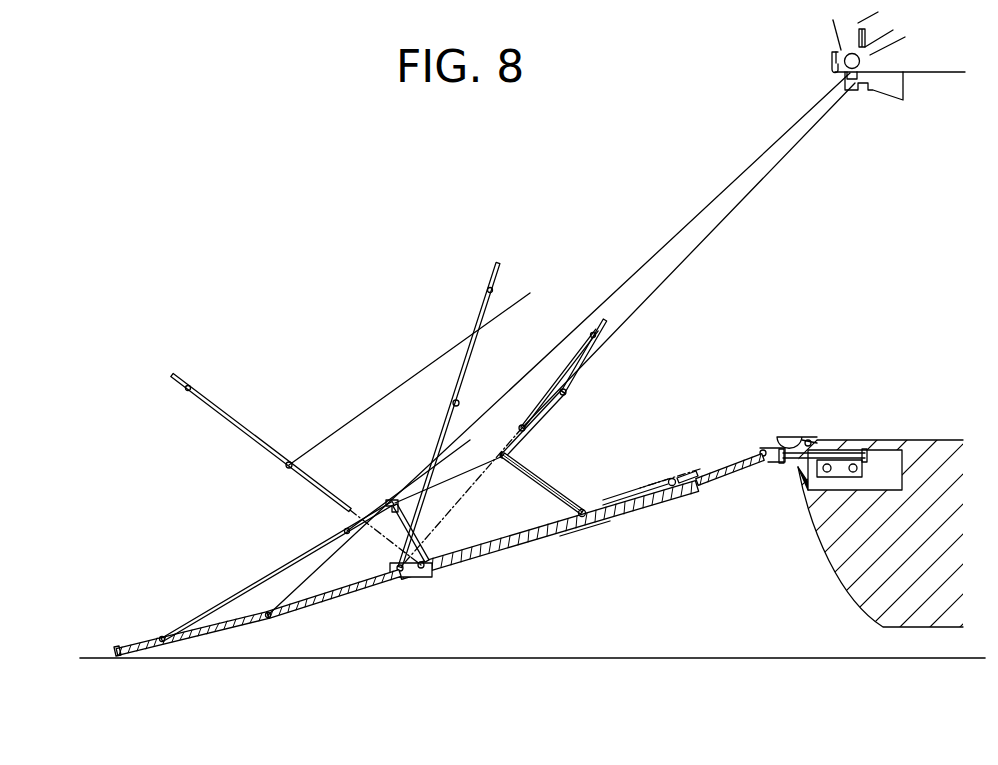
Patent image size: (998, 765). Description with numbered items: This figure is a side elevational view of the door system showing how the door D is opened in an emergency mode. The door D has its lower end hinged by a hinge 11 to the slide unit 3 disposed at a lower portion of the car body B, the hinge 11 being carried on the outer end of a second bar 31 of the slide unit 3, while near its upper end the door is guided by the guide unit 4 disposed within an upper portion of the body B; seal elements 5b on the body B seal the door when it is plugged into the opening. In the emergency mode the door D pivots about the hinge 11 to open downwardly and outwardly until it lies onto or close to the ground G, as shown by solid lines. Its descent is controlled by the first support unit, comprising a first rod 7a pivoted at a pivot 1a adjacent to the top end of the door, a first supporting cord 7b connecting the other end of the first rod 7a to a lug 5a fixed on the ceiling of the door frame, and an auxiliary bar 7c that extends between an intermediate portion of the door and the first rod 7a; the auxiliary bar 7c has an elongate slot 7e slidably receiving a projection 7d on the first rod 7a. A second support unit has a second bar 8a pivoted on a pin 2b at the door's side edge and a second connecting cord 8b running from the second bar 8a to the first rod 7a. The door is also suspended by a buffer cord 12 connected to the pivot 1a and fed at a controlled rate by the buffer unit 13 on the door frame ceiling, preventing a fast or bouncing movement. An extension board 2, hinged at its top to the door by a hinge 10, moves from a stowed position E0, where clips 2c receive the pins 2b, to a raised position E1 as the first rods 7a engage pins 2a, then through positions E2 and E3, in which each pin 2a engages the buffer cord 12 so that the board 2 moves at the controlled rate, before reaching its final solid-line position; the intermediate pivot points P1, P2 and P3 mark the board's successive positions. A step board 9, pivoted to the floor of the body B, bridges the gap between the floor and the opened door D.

The pivot 1a is at (401, 573).
The extension board 2 is at (270, 618).
The pin 2a is at (273, 615).
The pin 2b is at (162, 637).
The clip 2c is at (672, 478).
The slide unit 3 is at (863, 492).
The guide unit 4 is at (889, 108).
The lug 5a is at (897, 66).
The seal element 5b is at (830, 70).
The first rod 7a is at (560, 404).
The first supporting cord 7b is at (597, 362).
The auxiliary bar 7c is at (582, 509).
The projection 7d is at (503, 462).
The elongate slot 7e is at (546, 480).
The second bar 8a is at (312, 556).
The second connecting cord 8b is at (394, 502).
The step board 9 is at (792, 440).
The hinge 10 is at (425, 568).
The hinge 11 is at (760, 461).
The buffer cord 12 is at (690, 223).
The buffer unit 13 is at (874, 32).
The second bar 31 is at (787, 465).
The car body B is at (838, 577).
The door D is at (588, 524).
The position of extension board E0 is at (698, 469).
The position of extension board E1 is at (591, 332).
The position of extension board E2 is at (488, 290).
The position of extension board E3 is at (218, 410).
The ground G is at (188, 658).
The pivot point 1 P1 is at (520, 425).
The pivot point 2 P2 is at (453, 404).
The pivot point 3 P3 is at (286, 470).